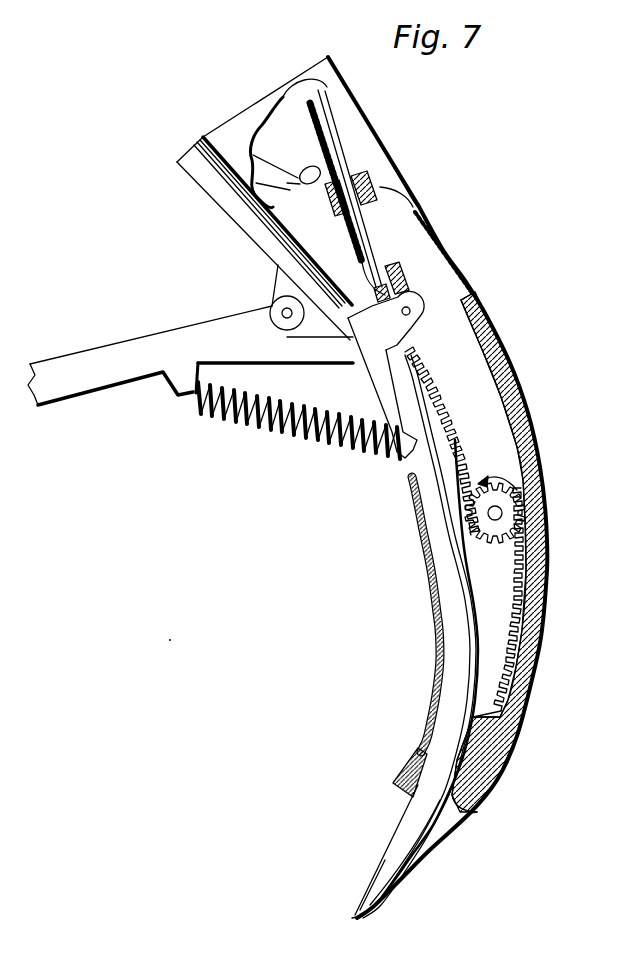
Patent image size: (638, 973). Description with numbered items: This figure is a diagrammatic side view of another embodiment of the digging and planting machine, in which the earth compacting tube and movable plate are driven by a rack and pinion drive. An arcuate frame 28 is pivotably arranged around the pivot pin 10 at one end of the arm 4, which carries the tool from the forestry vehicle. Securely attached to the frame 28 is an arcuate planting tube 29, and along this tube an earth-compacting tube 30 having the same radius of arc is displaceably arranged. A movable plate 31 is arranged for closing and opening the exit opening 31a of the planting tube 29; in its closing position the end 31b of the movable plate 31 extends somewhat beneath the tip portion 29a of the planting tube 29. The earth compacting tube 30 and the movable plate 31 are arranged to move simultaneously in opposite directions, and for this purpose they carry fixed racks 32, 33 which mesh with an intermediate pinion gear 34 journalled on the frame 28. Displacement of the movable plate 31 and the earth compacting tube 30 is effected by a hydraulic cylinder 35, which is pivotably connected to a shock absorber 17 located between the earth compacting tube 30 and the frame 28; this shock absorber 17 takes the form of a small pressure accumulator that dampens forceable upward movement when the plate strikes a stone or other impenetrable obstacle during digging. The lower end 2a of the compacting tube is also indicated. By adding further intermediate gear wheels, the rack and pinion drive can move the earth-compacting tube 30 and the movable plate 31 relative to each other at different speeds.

The arm 4 is at (88, 376).
The transverse pivot pin 10 is at (277, 300).
The shock absorbing device 17 is at (268, 128).
The hydraulic cylinder 35 is at (380, 187).
The fixed rack 32 is at (447, 417).
The intermediate pinion gear 34 is at (508, 510).
The fixed rack 33 is at (515, 594).
The earth-compacting tube 30 is at (438, 660).
The arm tip 2a is at (407, 773).
The arcuate frame 28 is at (497, 743).
The arcuate planting tube 29 is at (407, 833).
The exit opening 31a is at (400, 873).
The tip portion 29a is at (372, 890).
The end of movable plate 31b is at (352, 918).
The movable plate 31 is at (423, 865).